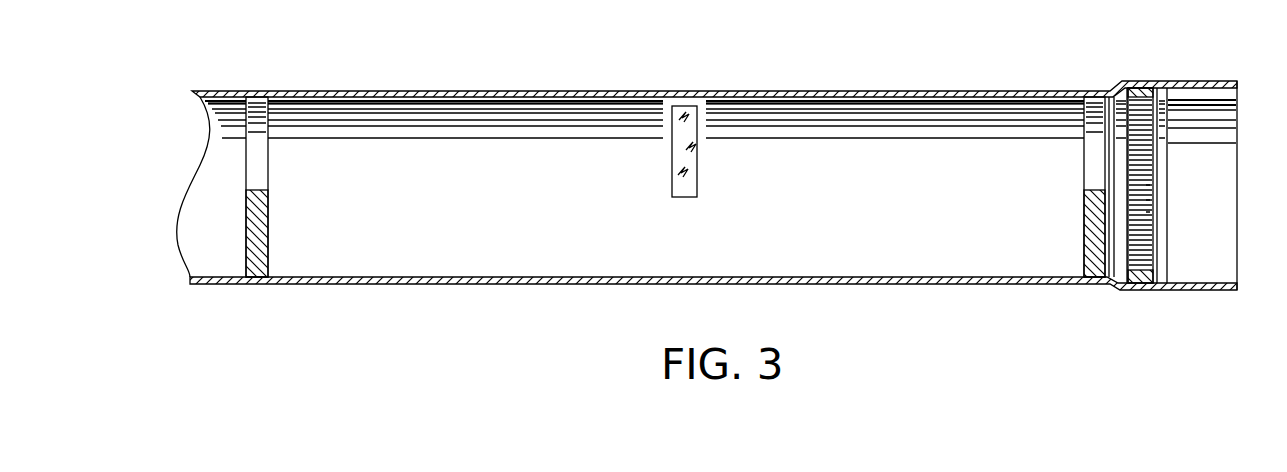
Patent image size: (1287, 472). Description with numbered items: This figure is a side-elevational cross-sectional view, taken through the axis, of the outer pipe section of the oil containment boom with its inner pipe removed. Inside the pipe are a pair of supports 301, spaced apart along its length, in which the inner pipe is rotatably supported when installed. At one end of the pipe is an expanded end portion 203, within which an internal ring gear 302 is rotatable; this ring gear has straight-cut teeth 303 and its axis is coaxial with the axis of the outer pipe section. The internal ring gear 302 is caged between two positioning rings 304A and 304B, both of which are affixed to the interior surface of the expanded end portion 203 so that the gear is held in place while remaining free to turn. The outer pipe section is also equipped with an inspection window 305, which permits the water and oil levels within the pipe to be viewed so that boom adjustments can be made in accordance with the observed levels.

The supports 301 is at (260, 250).
The internal ring gear 302 is at (1141, 78).
The straight-cut teeth 303 is at (1150, 185).
The positioning ring 304A is at (1122, 86).
The positioning ring 304B is at (1162, 86).
The inspection window 305 is at (686, 199).
The expanded end portion 203 is at (1236, 293).